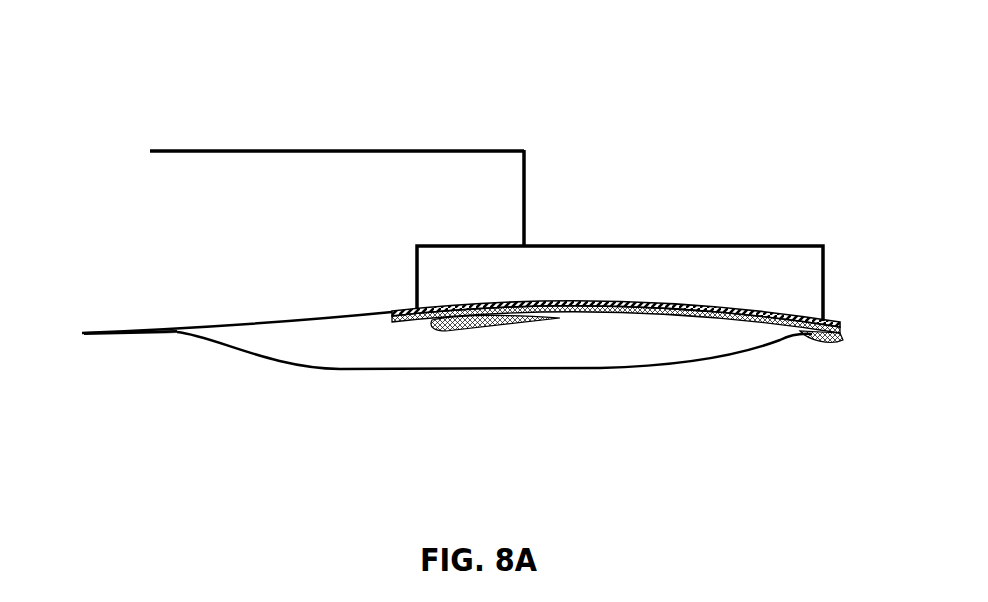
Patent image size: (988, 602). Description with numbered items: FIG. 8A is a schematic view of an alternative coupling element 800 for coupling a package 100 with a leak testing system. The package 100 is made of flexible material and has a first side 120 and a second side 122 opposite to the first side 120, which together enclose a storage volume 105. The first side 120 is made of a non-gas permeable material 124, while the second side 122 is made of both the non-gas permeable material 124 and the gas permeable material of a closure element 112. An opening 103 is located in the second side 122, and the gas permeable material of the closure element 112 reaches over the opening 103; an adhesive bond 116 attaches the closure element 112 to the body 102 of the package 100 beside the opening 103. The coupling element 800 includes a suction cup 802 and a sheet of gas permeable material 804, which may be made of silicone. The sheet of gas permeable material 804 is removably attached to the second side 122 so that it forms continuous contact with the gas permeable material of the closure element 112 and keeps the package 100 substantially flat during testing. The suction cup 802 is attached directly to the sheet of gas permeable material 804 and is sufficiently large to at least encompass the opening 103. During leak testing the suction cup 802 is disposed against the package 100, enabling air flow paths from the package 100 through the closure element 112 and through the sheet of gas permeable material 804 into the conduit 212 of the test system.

The coupling element 800 is at (724, 94).
The conduit 212 is at (268, 146).
The suction cup 802 is at (718, 246).
The opening 103 is at (617, 274).
The sheet of gas permeable material 804 is at (838, 328).
The second side 122 is at (116, 288).
The non-gas permeable material 124 is at (242, 324).
The body 102 is at (336, 372).
The adhesive bond 116 is at (437, 326).
The closure element 112 is at (632, 318).
The storage volume 105 is at (538, 359).
The package 100 is at (758, 383).
The first side 120 is at (121, 392).